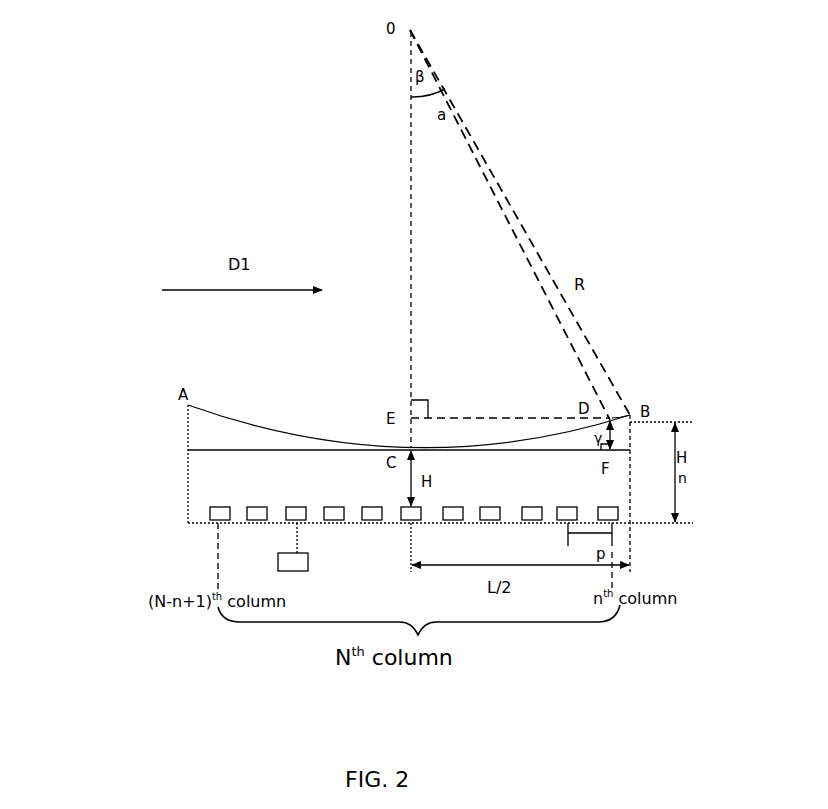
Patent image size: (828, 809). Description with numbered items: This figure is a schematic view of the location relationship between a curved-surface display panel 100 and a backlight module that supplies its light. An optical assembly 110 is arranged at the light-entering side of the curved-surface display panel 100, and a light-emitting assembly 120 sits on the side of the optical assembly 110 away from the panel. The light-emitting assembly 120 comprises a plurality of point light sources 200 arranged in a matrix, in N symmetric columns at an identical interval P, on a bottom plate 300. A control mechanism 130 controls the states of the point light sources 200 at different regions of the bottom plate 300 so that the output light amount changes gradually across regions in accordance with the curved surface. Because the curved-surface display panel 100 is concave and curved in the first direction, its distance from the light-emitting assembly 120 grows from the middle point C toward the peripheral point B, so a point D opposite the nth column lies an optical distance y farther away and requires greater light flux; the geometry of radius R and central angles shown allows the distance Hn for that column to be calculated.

The curved-surface display panel 100 is at (288, 437).
The optical assembly 110 is at (227, 465).
The light-emitting assembly 120 is at (165, 588).
The control mechanism 130 is at (303, 568).
The point light sources 200 is at (218, 507).
The bottom plate 300 is at (200, 523).